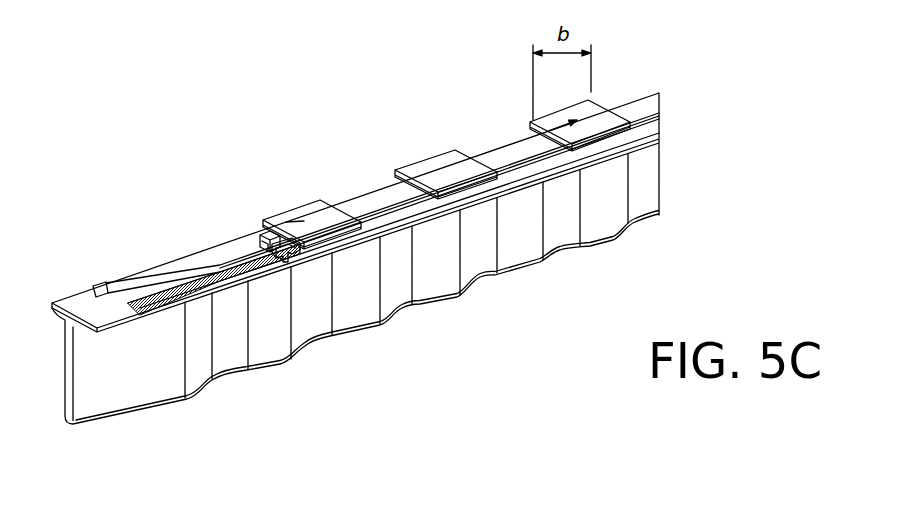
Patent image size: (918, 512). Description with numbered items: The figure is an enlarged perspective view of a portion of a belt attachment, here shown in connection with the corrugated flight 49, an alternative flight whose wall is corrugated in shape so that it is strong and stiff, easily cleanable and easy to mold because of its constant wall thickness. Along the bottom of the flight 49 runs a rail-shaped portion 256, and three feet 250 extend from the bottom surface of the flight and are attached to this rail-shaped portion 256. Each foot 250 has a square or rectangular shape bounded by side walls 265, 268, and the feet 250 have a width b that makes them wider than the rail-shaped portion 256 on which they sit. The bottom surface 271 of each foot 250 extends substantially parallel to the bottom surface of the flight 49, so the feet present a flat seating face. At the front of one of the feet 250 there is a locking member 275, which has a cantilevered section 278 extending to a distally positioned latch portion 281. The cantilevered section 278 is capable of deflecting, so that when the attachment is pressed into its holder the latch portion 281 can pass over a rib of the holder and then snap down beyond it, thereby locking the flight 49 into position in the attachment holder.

The corrugated flight 49 is at (524, 248).
The feet 250 is at (530, 130).
The rail-shaped portion 256 is at (390, 213).
The side wall 265 is at (337, 228).
The side wall 268 is at (302, 222).
The bottom surface of the foot 271 is at (292, 238).
The locking member 275 is at (239, 239).
The cantilevered section 278 is at (272, 245).
The latch portion 281 is at (263, 240).